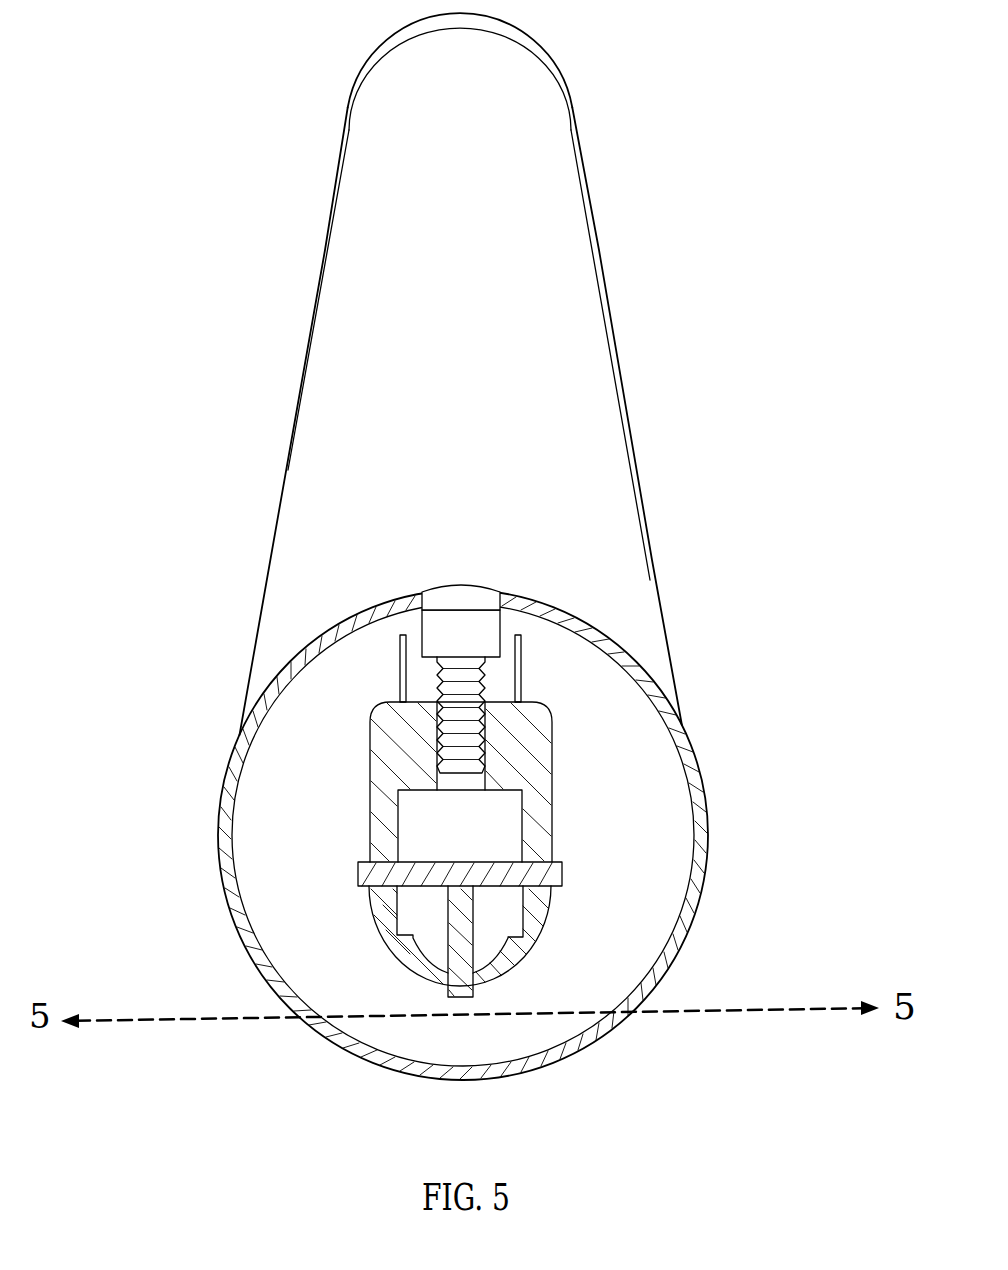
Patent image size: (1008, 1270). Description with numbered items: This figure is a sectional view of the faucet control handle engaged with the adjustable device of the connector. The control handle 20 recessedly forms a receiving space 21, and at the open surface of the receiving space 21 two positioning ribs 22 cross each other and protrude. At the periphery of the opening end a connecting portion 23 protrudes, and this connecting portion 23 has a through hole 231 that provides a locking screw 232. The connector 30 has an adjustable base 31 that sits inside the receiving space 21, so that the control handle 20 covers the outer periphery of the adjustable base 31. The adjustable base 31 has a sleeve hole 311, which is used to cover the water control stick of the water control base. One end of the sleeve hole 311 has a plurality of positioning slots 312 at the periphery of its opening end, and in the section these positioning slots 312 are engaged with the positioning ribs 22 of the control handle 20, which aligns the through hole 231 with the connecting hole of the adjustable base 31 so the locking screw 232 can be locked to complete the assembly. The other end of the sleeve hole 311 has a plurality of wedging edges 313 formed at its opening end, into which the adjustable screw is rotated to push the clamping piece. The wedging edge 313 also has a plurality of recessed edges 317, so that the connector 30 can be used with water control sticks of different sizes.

The control handle 20 is at (524, 546).
The receiving space 21 is at (655, 812).
The positioning ribs 22 is at (473, 977).
The connecting portion 23 is at (437, 650).
The through hole 231 is at (500, 592).
The locking screw 232 is at (447, 635).
The connector 30 is at (521, 998).
The adjustable base 31 is at (338, 782).
The sleeve hole 311 is at (442, 825).
The positioning slots 312 is at (555, 893).
The wedging edges 313 is at (443, 948).
The recessed edges 317 is at (483, 950).